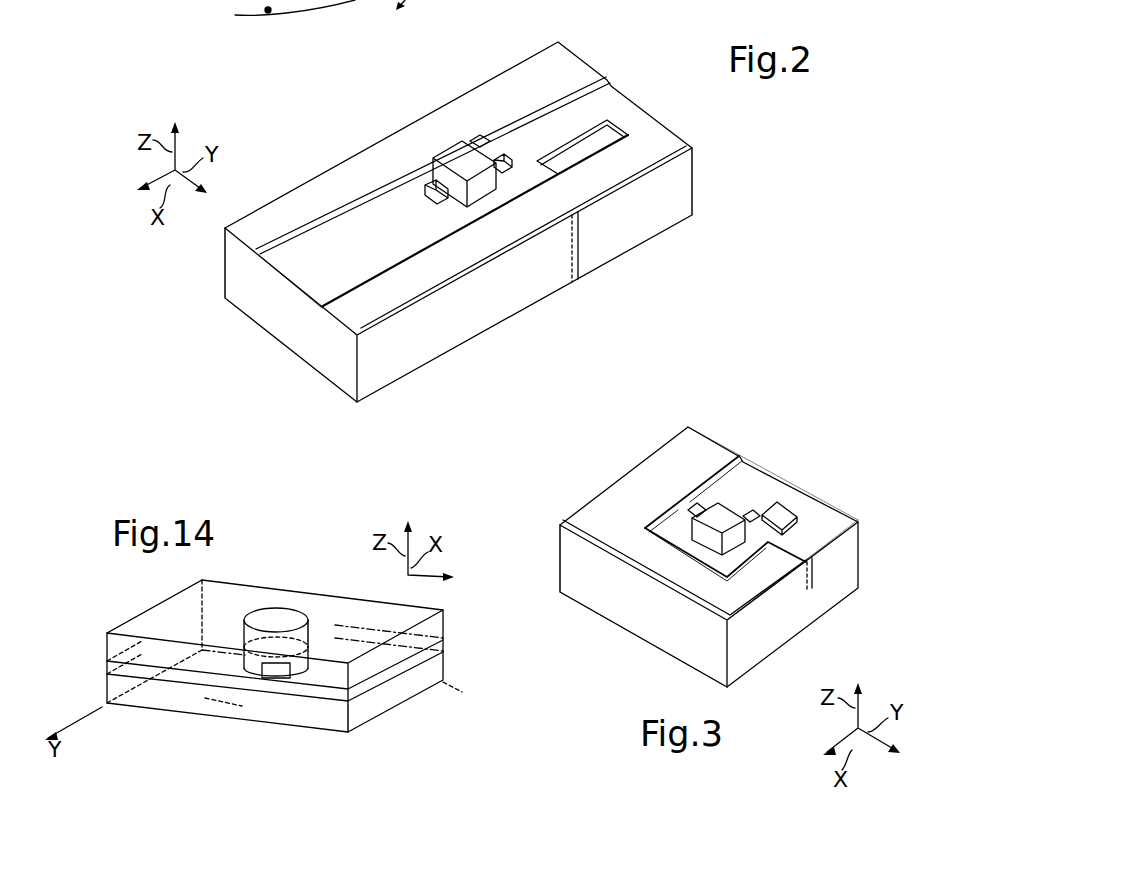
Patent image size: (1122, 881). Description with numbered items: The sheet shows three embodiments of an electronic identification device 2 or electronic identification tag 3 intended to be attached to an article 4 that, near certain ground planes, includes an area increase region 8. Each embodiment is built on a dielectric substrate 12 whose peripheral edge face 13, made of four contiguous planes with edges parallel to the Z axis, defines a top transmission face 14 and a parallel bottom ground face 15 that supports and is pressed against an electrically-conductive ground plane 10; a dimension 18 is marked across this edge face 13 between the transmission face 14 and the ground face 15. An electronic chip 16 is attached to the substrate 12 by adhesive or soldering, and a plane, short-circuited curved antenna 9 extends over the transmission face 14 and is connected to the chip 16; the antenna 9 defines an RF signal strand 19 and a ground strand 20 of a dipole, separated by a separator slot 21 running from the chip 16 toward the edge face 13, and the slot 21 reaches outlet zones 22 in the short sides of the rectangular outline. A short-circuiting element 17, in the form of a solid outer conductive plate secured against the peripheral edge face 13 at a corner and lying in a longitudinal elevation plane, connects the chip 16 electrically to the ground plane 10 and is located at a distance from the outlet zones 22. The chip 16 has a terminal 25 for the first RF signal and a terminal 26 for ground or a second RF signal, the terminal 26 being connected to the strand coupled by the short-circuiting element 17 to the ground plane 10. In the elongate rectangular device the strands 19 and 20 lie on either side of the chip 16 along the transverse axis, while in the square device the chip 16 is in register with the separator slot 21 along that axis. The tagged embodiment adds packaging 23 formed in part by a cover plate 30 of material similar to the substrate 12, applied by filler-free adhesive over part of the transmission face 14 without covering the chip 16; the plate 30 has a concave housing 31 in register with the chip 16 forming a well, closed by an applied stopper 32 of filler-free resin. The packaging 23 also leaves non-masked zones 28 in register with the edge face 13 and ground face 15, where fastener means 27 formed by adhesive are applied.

In FIG. 2, the electronic identification device 2 is at (168, 292).
In FIG. 3, the electronic identification device 2 is at (876, 470).
In FIG. 14, the electronic identification device 2 is at (294, 690).
In FIG. 14, the electronic identification tag 3 is at (370, 744).
In FIG. 2, the article 4 is at (298, 29).
In FIG. 2, the area increase region 8 is at (268, 13).
In FIG. 3, the curved antenna 9 is at (661, 465).
In FIG. 14, the curved antenna 9 is at (443, 646).
In FIG. 2, the ground plane 10 is at (458, 222).
In FIG. 3, the ground plane 10 is at (823, 617).
In FIG. 14, the ground plane 10 is at (275, 690).
In FIG. 2, the dielectric substrate 12 is at (573, 278).
In FIG. 3, the dielectric substrate 12 is at (843, 570).
In FIG. 14, the dielectric substrate 12 is at (160, 695).
In FIG. 2, the peripheral edge face 13 is at (523, 288).
In FIG. 3, the peripheral edge face 13 is at (572, 568).
In FIG. 14, the peripheral edge face 13 is at (397, 693).
In FIG. 2, the transmission face 14 is at (337, 240).
In FIG. 2, the ground face 15 is at (482, 333).
In FIG. 14, the ground face 15 is at (252, 720).
In FIG. 2, the electronic chip 16 is at (450, 157).
In FIG. 3, the electronic chip 16 is at (718, 517).
In FIG. 14, the electronic chip 16 is at (276, 679).
In FIG. 2, the short-circuiting element 17 is at (662, 215).
In FIG. 3, the short-circuiting element 17 is at (747, 657).
In FIG. 2, the height 18 is at (697, 145).
In FIG. 14, the height 18 is at (73, 721).
In FIG. 2, the RF signal strand 19 is at (560, 78).
In FIG. 3, the RF signal strand 19 is at (838, 518).
In FIG. 2, the ground strand 20 is at (367, 307).
In FIG. 3, the ground strand 20 is at (713, 597).
In FIG. 2, the separator slot 21 is at (310, 272).
In FIG. 3, the separator slot 21 is at (743, 482).
In FIG. 2, the outlet zones 22 is at (592, 92).
In FIG. 3, the outlet zones 22 is at (740, 457).
In FIG. 14, the packaging 23 is at (228, 570).
In FIG. 2, the terminal 25 is at (506, 158).
In FIG. 3, the terminal 25 is at (749, 512).
In FIG. 2, the terminal 26 is at (474, 140).
In FIG. 3, the terminal 26 is at (690, 506).
In FIG. 14, the fastener means 27 is at (218, 706).
In FIG. 14, the non-masked zones 28 is at (118, 615).
In FIG. 14, the cover plate 30 is at (444, 627).
In FIG. 14, the concave housing 31 is at (312, 633).
In FIG. 14, the stopper 32 is at (276, 618).